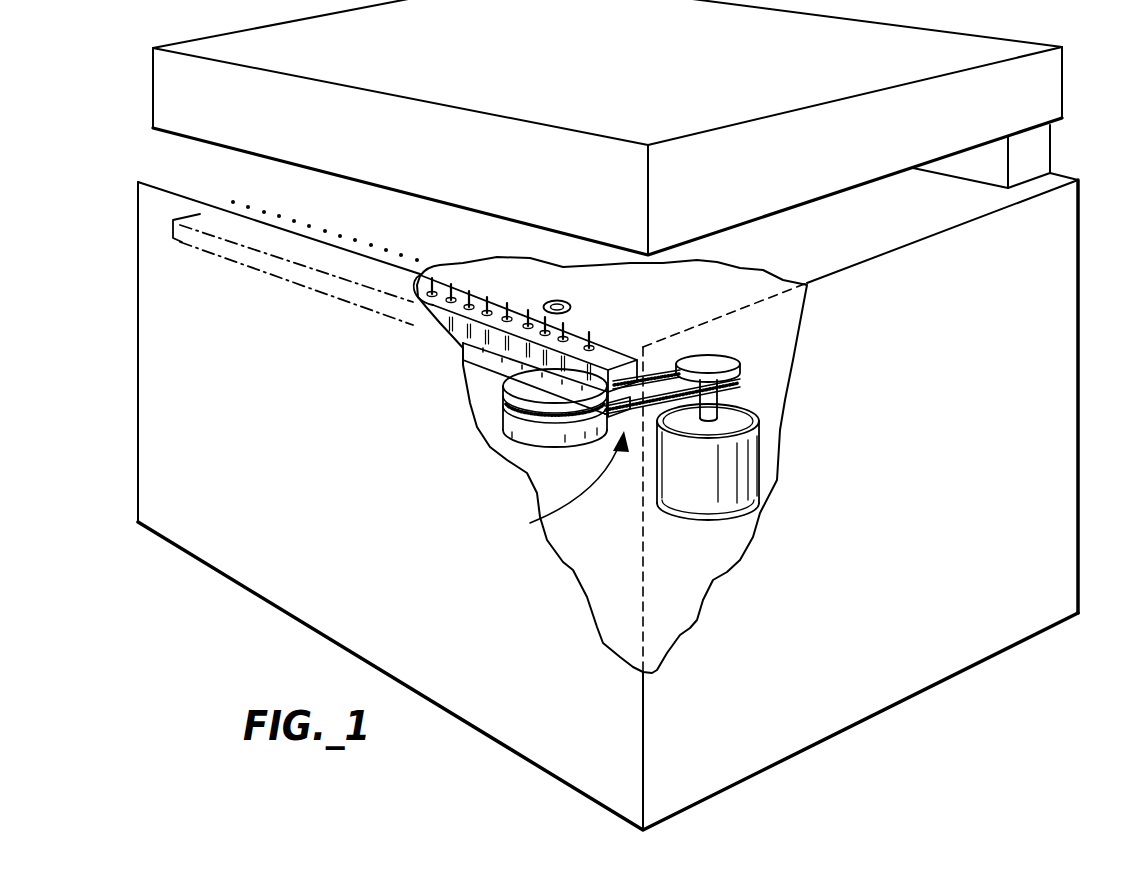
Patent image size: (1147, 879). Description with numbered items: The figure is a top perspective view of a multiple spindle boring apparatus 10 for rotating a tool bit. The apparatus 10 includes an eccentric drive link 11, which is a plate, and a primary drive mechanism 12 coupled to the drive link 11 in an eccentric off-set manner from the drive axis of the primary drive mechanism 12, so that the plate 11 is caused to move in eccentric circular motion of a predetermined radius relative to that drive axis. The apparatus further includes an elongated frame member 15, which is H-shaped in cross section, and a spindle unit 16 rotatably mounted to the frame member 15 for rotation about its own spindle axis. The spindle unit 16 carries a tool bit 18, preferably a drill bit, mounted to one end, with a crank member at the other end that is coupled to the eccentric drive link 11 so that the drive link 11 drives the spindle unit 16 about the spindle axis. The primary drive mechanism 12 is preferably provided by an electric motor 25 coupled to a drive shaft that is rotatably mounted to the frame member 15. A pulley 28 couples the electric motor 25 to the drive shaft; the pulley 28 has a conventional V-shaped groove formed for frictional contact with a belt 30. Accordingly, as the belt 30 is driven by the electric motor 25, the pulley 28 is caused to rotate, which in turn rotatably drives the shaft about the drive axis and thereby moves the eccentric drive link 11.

The apparatus 10 is at (1091, 224).
The eccentric drive link 11 is at (483, 364).
The primary drive mechanism 12 is at (566, 484).
The frame member 15 is at (618, 298).
The spindle unit 16 is at (462, 318).
The tool bit 18 is at (489, 296).
The electric motor 25 is at (763, 436).
The pulley 28 is at (517, 432).
The belt 30 is at (540, 423).